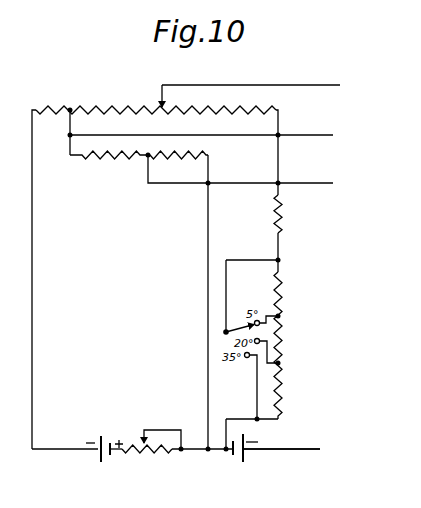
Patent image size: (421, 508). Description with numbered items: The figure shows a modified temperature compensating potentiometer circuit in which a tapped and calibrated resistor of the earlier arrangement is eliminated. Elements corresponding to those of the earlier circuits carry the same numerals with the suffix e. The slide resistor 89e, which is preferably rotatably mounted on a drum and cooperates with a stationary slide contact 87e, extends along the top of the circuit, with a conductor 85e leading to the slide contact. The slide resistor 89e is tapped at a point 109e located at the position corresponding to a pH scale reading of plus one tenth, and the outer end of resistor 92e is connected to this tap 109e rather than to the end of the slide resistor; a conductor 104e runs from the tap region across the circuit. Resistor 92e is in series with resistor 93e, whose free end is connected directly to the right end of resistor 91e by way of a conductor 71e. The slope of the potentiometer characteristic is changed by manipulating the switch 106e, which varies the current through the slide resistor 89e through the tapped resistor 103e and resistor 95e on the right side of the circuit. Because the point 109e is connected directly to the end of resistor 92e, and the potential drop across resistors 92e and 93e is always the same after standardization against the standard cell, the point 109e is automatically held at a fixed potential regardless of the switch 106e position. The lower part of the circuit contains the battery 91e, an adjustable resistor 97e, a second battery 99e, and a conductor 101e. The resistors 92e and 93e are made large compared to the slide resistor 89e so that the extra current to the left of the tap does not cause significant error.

The slide resistor 89e is at (108, 107).
The tap 109e is at (83, 97).
The stationary slide contact 87e is at (162, 85).
The conductor 85e is at (281, 77).
The conductor 104e is at (319, 129).
The resistor 92e is at (112, 160).
The resistor 93e is at (185, 160).
The conductor 71e is at (330, 178).
The resistor 95e is at (283, 218).
The tapped resistor 103e is at (283, 300).
The switch 106e is at (226, 332).
The resistor 91e is at (113, 430).
The potentiometer 97e is at (149, 455).
The battery 99e is at (240, 460).
The conductor 101e is at (287, 449).